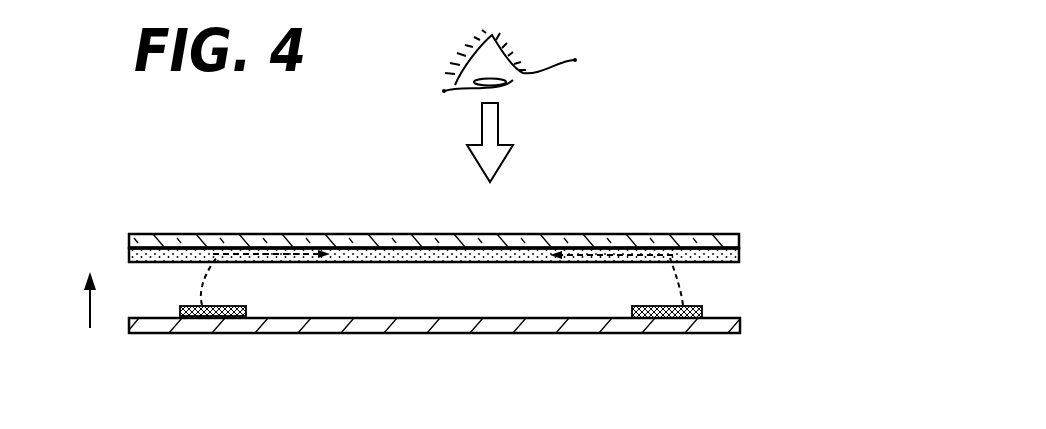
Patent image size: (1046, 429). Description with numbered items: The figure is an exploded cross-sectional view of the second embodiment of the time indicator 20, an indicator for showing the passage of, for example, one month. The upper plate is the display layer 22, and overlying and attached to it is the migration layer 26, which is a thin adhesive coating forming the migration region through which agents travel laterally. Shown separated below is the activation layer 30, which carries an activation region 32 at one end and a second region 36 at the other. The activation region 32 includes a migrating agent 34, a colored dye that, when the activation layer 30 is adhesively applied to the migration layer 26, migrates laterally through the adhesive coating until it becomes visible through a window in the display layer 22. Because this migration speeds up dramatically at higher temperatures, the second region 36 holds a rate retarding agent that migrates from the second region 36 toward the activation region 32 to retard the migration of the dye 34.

The time indicator 20 is at (660, 202).
The display layer 22 is at (717, 234).
The migration layer 26 is at (740, 257).
The activation layer 30 is at (678, 333).
The activation region 32 is at (245, 310).
The migrating agent 34 is at (295, 263).
The second region 36 is at (703, 308).